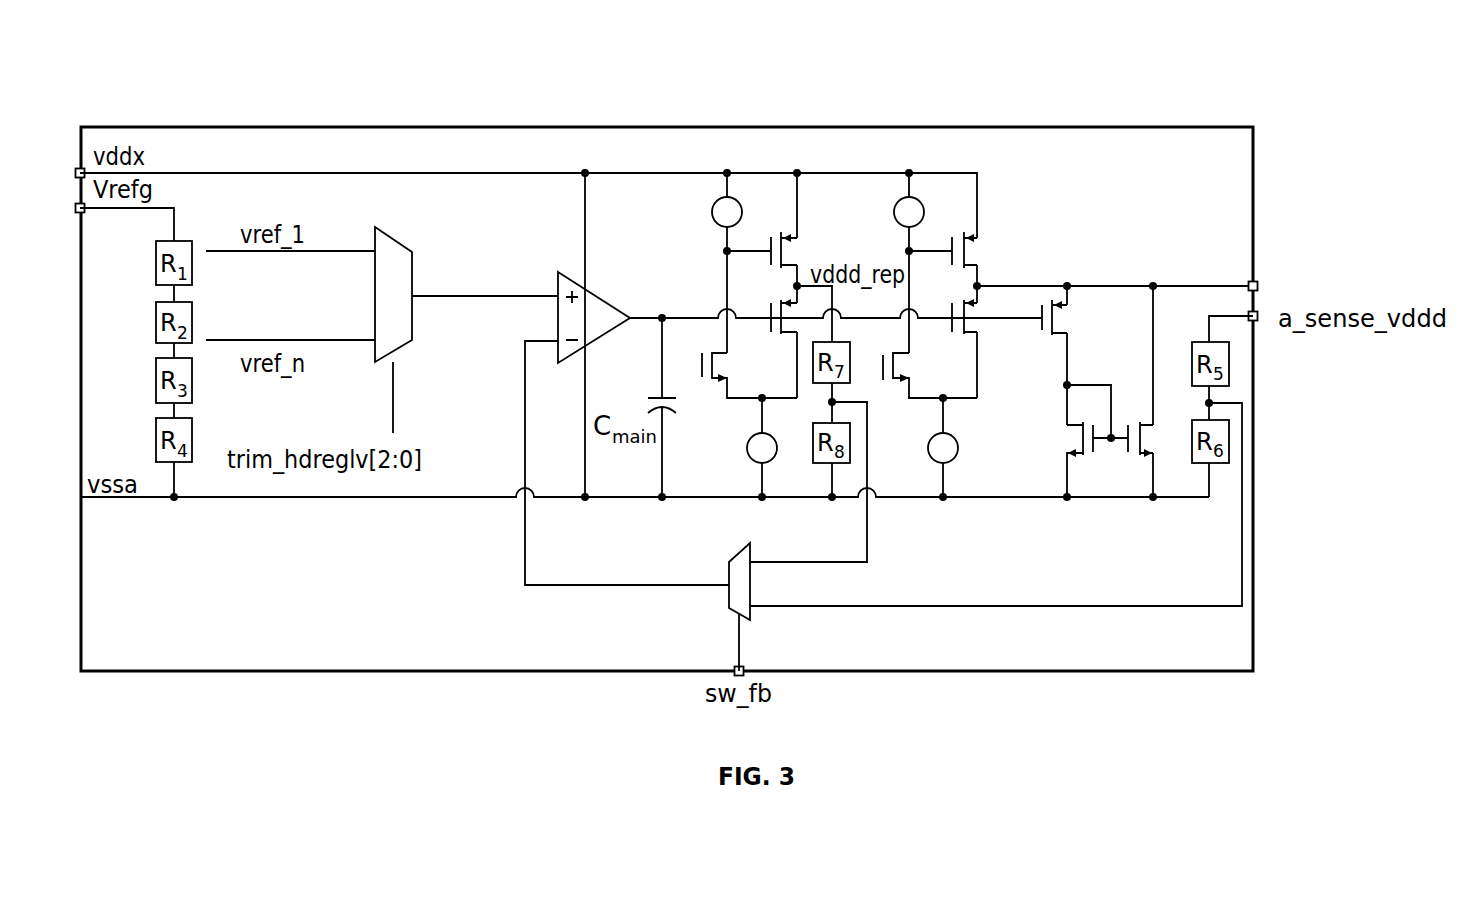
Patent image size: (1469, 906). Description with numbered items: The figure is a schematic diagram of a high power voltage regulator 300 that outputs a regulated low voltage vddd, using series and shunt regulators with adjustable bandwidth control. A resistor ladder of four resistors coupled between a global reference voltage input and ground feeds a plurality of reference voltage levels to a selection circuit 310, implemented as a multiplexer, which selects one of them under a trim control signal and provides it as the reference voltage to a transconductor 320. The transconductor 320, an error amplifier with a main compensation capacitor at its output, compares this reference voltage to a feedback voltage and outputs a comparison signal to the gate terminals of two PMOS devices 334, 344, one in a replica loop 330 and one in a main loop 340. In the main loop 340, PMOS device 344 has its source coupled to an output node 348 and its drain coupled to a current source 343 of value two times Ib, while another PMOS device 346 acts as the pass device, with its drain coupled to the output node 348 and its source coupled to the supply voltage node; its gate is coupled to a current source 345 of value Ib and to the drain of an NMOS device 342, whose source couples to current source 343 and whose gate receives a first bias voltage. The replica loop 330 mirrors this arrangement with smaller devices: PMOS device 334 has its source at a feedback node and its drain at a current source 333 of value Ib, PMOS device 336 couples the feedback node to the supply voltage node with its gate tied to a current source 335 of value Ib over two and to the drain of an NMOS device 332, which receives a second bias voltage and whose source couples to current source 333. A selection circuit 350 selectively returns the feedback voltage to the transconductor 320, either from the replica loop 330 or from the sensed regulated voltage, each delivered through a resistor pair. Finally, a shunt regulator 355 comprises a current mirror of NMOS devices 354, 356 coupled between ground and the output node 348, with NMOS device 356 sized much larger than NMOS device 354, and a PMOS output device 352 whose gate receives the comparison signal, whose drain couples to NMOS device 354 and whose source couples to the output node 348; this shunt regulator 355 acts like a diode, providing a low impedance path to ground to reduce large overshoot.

The voltage regulator 300 is at (1230, 64).
The selection circuit 310 is at (395, 240).
The transconductor 320 is at (552, 279).
The replica loop 330 is at (735, 284).
The NMOS device 332 is at (713, 391).
The current source 333 is at (745, 458).
The PMOS device 334 is at (771, 316).
The current source 335 is at (714, 205).
The PMOS device 336 is at (792, 250).
The main loop 340 is at (975, 277).
The NMOS device 342 is at (922, 368).
The current source 343 is at (960, 452).
The PMOS device 344 is at (968, 313).
The current source 345 is at (927, 212).
The PMOS device 346 is at (978, 247).
The output node 348 is at (1258, 282).
The selection circuit 350 is at (729, 572).
The PMOS output device 352 is at (1060, 320).
The NMOS device 354 is at (1080, 438).
The shunt regulator 355 is at (1123, 377).
The NMOS device 356 is at (1145, 438).